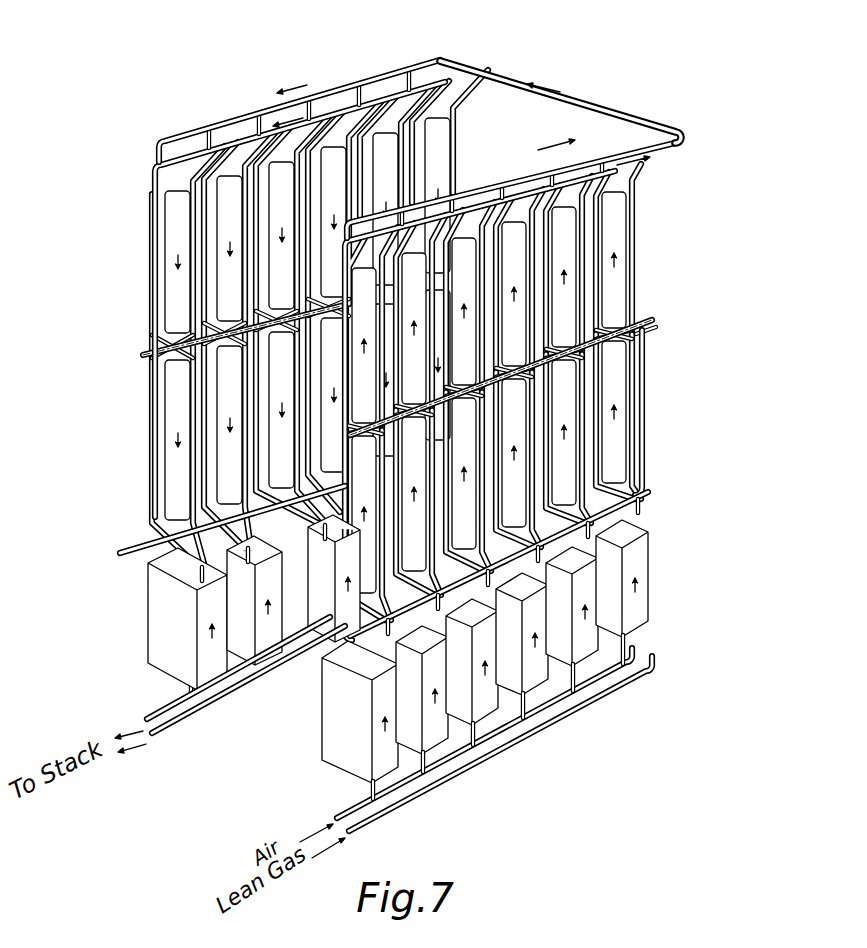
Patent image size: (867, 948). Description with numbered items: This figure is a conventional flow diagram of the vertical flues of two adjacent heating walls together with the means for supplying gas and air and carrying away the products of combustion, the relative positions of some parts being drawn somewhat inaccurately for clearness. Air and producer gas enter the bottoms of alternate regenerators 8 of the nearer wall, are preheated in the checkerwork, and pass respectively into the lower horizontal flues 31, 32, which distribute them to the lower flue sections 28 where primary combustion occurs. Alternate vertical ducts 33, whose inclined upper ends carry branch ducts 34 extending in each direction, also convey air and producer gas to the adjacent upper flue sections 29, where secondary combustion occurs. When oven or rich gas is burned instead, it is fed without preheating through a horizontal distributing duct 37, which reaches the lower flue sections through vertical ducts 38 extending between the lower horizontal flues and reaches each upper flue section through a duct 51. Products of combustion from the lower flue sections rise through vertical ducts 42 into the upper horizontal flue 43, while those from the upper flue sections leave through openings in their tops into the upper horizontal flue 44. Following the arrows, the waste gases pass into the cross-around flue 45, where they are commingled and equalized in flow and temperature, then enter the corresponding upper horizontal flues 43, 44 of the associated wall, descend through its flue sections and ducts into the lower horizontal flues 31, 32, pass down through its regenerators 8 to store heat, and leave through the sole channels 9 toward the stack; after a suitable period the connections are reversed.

The regenerator 8 is at (158, 637).
The sole channel 9 is at (392, 790).
The lower flue section 28 is at (176, 498).
The upper flue section 29 is at (176, 305).
The lower horizontal flue 31 is at (185, 588).
The lower horizontal flue 32 is at (176, 566).
The vertical duct 33 is at (188, 428).
The branch duct 34 is at (190, 345).
The horizontal distributing duct 37 is at (150, 364).
The vertical duct 38 is at (621, 476).
The vertical duct 42 is at (207, 237).
The upper horizontal flue 43 is at (440, 80).
The upper horizontal flue 44 is at (343, 78).
The cross-around flue 45 is at (615, 110).
The duct 51 is at (640, 312).